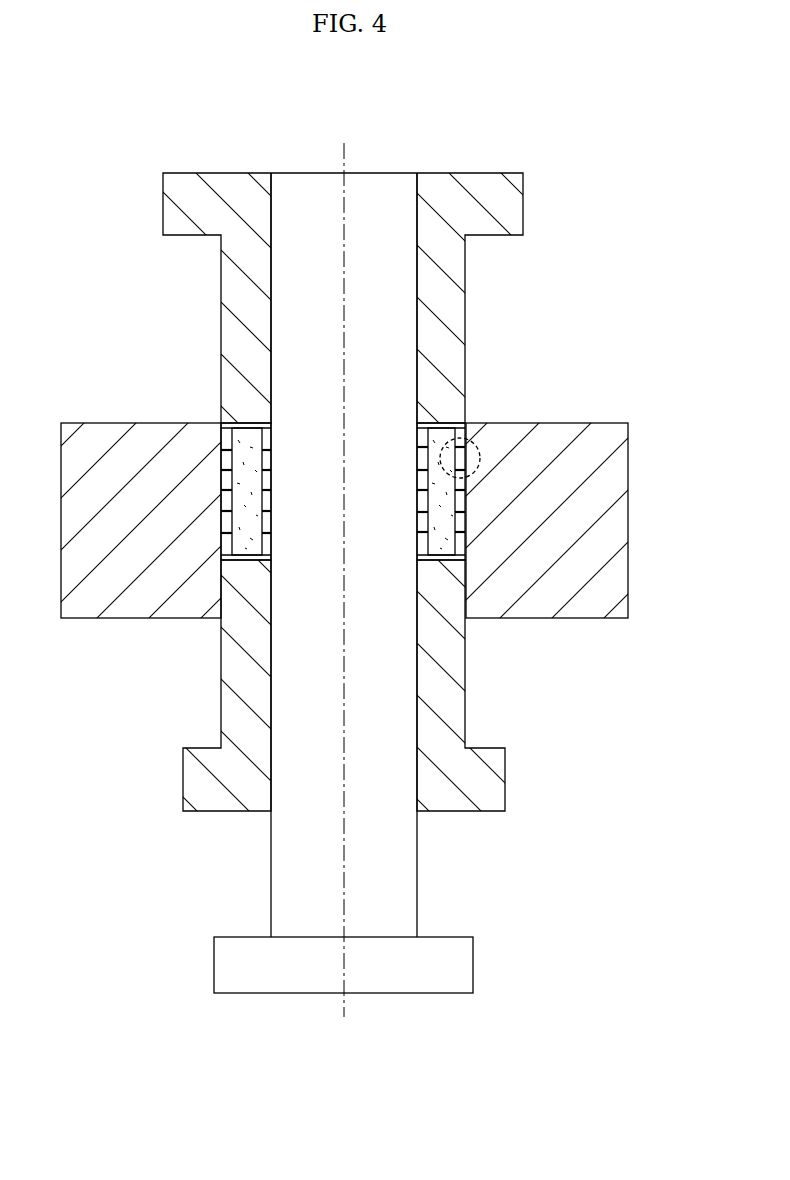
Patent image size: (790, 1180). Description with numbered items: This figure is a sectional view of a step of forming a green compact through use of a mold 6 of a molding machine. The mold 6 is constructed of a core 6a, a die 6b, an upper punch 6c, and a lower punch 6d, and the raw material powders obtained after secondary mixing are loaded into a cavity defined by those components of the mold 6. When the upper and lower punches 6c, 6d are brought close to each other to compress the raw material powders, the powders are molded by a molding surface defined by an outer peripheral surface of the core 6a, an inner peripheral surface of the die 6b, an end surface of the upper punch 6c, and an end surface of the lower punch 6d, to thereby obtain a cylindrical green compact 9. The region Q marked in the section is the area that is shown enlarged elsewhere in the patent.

The mold 6 is at (582, 396).
The core 6a is at (405, 878).
The die 6b is at (612, 527).
The upper punch 6c is at (455, 309).
The lower punch 6d is at (455, 712).
The green compact 9 is at (220, 464).
The region Q is at (472, 443).